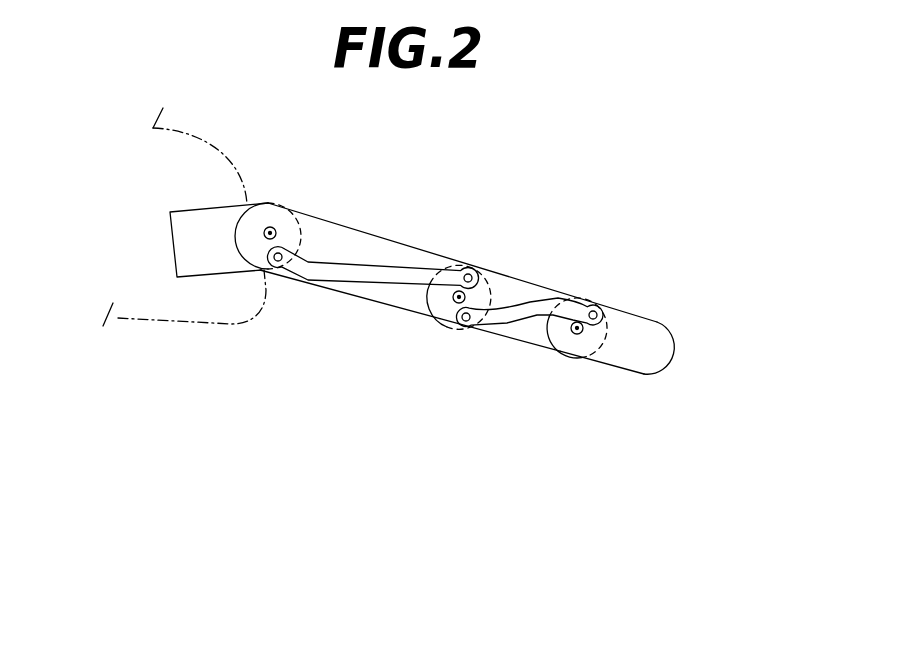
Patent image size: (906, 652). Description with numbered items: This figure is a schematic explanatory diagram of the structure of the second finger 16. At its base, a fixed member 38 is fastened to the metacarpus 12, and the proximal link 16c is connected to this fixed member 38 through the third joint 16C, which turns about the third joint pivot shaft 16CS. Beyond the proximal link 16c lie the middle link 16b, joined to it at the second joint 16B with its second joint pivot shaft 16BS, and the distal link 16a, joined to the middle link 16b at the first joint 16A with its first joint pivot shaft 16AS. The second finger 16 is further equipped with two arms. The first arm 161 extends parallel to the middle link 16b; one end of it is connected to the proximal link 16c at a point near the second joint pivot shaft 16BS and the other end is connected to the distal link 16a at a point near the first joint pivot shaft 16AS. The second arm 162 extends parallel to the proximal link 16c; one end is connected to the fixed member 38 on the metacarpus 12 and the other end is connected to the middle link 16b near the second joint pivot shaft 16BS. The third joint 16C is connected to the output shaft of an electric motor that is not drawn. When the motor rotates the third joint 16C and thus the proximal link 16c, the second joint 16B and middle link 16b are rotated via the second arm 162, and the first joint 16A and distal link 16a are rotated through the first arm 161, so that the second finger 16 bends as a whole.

The metacarpus 12 is at (197, 336).
The fixed member 38 is at (188, 243).
The second finger 16 is at (514, 327).
The distal link 16a is at (637, 360).
The middle link 16b is at (521, 337).
The proximal link 16c is at (372, 293).
The first joint 16A is at (594, 284).
The second joint 16B is at (472, 248).
The third joint 16C is at (305, 188).
The first joint pivot shaft 16AS is at (576, 336).
The second joint pivot shaft 16BS is at (456, 303).
The third joint pivot shaft 16CS is at (270, 227).
The first arm 161 is at (535, 308).
The second arm 162 is at (362, 277).